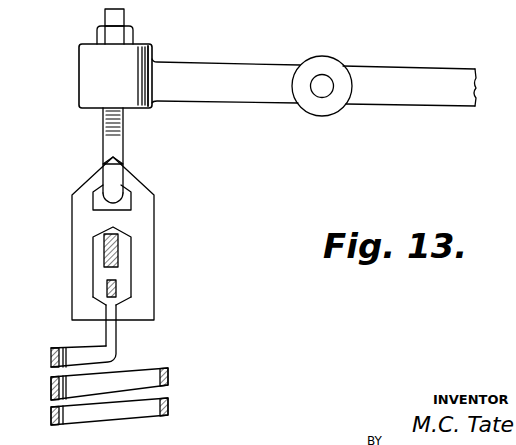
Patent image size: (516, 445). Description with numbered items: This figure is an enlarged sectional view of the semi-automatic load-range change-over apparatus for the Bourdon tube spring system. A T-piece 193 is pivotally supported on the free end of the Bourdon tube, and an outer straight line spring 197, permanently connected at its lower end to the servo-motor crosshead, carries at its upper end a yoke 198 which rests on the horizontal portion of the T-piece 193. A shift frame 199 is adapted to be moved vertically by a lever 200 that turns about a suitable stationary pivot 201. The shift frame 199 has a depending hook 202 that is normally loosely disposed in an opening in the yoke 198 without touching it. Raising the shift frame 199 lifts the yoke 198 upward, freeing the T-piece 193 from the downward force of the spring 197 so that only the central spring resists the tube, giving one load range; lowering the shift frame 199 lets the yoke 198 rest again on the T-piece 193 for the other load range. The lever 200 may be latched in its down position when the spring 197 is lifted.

The T-piece 193 is at (118, 248).
The straight line spring 197 is at (203, 379).
The yoke 198 is at (148, 223).
The shift frame 199 is at (85, 78).
The lever 200 is at (243, 73).
The stationary pivot 201 is at (327, 82).
The depending hook 202 is at (103, 149).